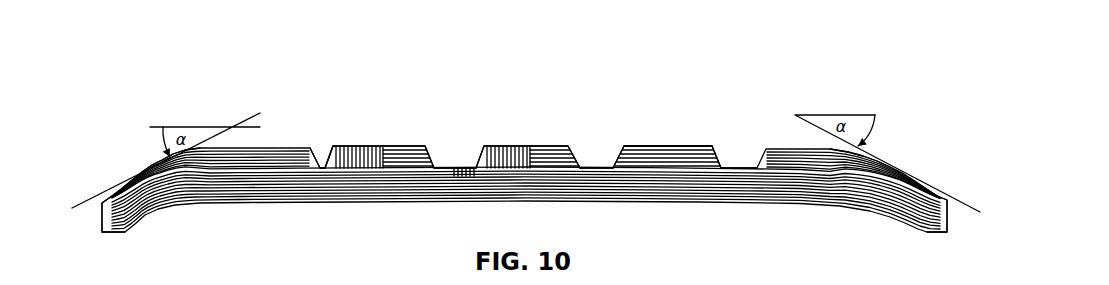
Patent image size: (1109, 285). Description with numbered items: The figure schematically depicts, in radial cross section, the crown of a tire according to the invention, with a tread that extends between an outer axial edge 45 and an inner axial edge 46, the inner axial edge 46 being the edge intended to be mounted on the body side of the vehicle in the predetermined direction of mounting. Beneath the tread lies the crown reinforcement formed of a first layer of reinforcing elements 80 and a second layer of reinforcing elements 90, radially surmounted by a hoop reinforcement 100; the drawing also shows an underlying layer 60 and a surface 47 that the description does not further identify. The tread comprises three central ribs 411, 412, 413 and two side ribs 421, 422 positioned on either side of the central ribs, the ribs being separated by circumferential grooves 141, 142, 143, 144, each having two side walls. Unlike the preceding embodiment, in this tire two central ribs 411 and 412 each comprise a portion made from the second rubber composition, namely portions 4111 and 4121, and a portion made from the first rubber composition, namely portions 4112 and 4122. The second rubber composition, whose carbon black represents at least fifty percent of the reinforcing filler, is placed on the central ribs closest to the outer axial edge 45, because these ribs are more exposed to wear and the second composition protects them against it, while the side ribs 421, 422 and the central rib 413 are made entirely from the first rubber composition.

The outer axial edge 45 is at (140, 168).
The inner axial edge 46 is at (915, 170).
The top surface of third protrusion 47 is at (694, 140).
The first layer 60 is at (172, 211).
The first layer of reinforcing elements 80 is at (262, 200).
The second layer of reinforcing elements 90 is at (329, 203).
The hoop reinforcement 100 is at (388, 203).
The circumferential groove 141 is at (316, 140).
The circumferential groove 142 is at (459, 156).
The circumferential groove 143 is at (602, 156).
The circumferential groove 144 is at (742, 160).
The central rib 411 is at (384, 109).
The portion made from the second rubber composition 4111 is at (350, 143).
The portion made from the first rubber composition 4112 is at (416, 142).
The central rib 412 is at (529, 105).
The portion made from the second rubber composition 4121 is at (507, 143).
The portion made from the first rubber composition 4122 is at (563, 141).
The central rib 413 is at (672, 156).
The side rib 421 is at (268, 144).
The side rib 422 is at (807, 158).